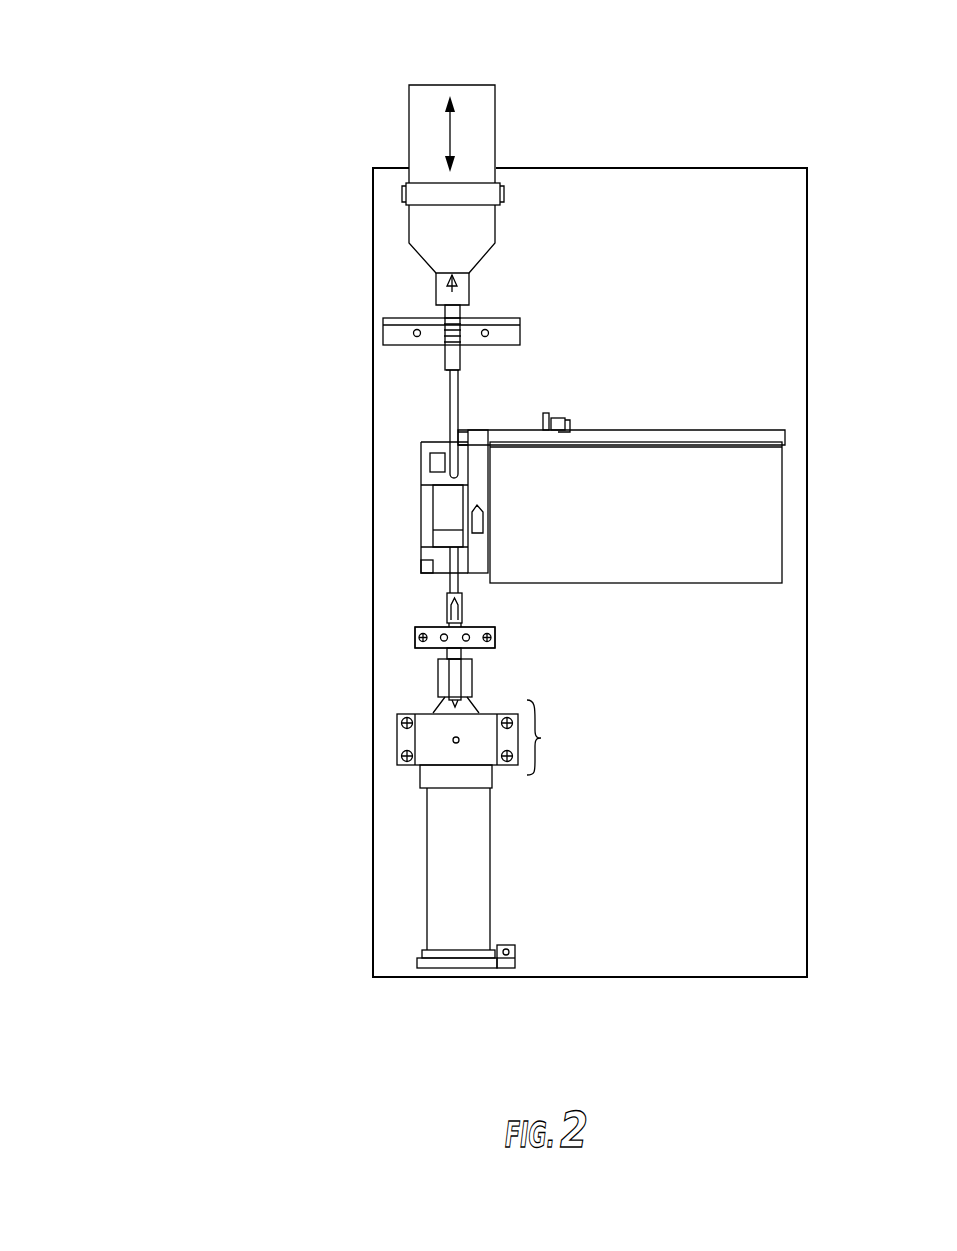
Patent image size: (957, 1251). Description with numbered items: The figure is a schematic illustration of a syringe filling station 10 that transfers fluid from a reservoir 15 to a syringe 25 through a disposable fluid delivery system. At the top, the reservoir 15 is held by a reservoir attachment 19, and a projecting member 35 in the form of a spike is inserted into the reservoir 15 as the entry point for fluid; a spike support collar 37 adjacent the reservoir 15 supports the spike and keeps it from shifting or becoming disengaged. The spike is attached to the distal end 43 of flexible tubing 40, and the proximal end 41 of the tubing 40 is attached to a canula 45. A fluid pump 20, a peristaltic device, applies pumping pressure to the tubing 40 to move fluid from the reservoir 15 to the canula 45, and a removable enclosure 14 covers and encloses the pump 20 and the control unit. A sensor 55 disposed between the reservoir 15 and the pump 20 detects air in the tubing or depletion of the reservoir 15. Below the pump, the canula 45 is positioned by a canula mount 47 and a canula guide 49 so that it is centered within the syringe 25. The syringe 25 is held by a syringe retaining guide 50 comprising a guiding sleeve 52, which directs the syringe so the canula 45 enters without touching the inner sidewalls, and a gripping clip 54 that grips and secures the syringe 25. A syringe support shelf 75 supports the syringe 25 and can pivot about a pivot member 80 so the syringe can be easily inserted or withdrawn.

The filling station 10 is at (106, 253).
The removable enclosure 14 is at (590, 462).
The reservoir 15 is at (445, 85).
The reservoir attachment 19 is at (470, 183).
The fluid pump 20 is at (421, 505).
The syringe 25 is at (427, 835).
The projecting member 35 is at (445, 352).
The spike support collar 37 is at (397, 316).
The flexible tubing 40 is at (460, 420).
The proximal end 41 is at (462, 585).
The distal end 43 is at (461, 376).
The canula 45 is at (443, 685).
The canula mount 47 is at (495, 637).
The canula guide 49 is at (455, 637).
The syringe retaining guide 50 is at (555, 737).
The guiding sleeve 52 is at (420, 775).
The gripping clip 54 is at (397, 742).
The sensor 55 is at (563, 415).
The syringe support shelf 75 is at (417, 963).
The pivot member 80 is at (515, 960).